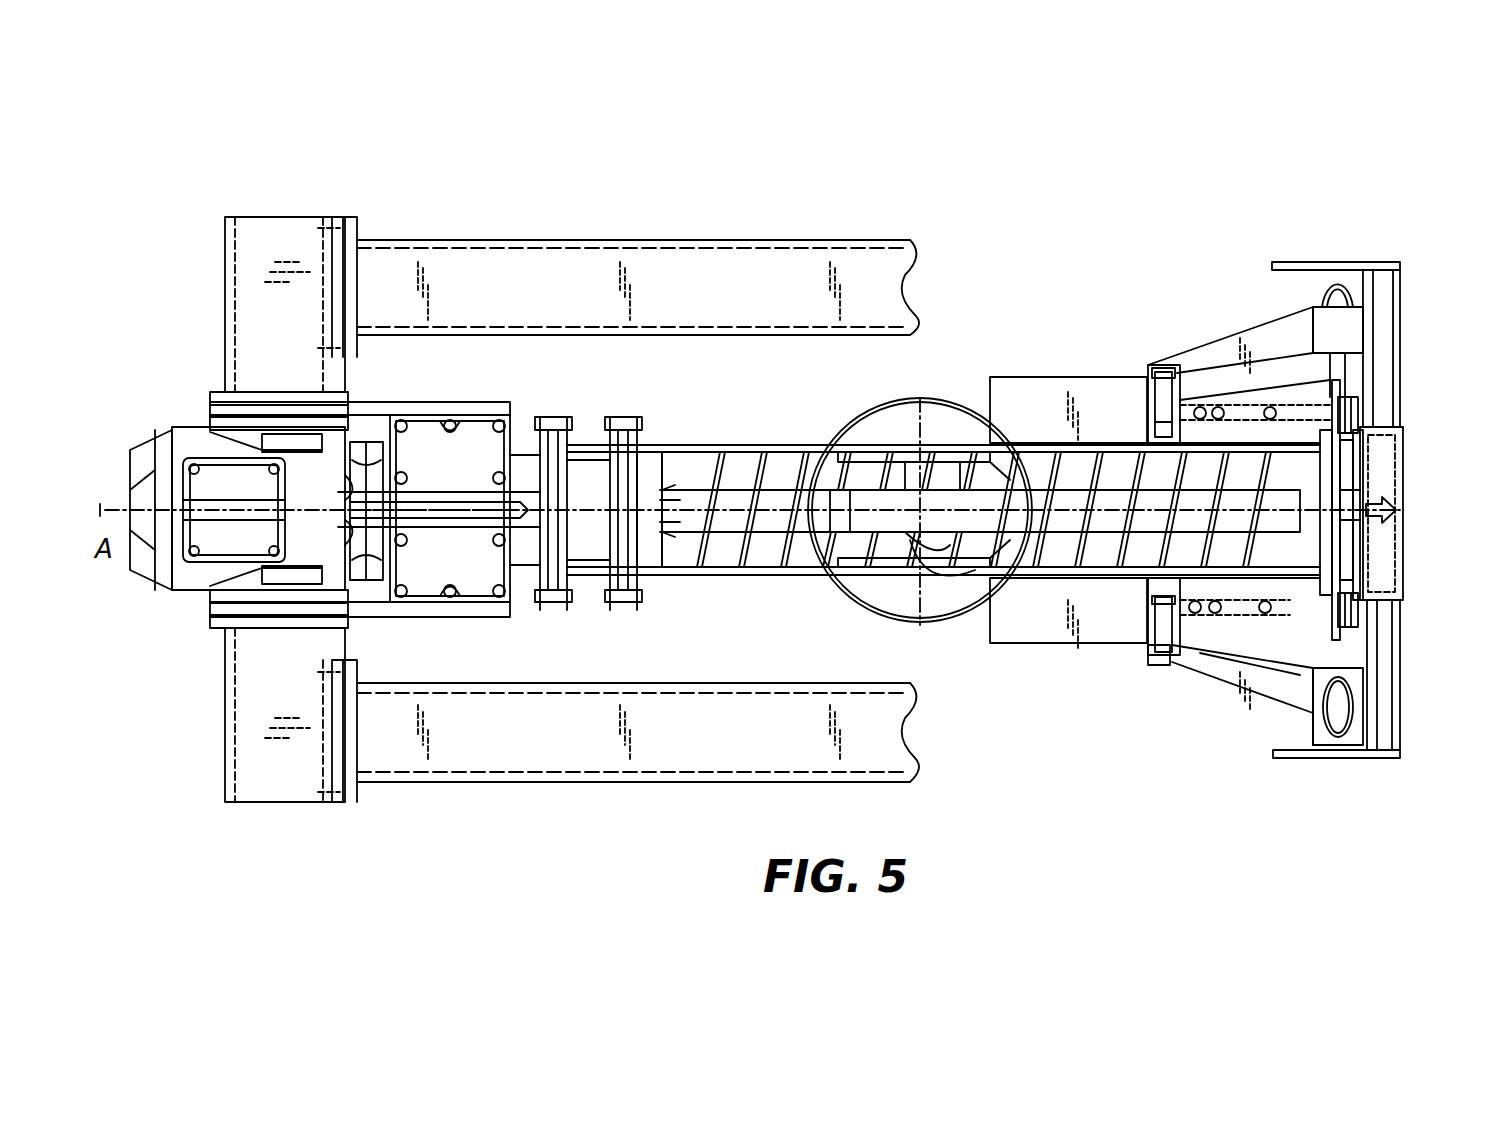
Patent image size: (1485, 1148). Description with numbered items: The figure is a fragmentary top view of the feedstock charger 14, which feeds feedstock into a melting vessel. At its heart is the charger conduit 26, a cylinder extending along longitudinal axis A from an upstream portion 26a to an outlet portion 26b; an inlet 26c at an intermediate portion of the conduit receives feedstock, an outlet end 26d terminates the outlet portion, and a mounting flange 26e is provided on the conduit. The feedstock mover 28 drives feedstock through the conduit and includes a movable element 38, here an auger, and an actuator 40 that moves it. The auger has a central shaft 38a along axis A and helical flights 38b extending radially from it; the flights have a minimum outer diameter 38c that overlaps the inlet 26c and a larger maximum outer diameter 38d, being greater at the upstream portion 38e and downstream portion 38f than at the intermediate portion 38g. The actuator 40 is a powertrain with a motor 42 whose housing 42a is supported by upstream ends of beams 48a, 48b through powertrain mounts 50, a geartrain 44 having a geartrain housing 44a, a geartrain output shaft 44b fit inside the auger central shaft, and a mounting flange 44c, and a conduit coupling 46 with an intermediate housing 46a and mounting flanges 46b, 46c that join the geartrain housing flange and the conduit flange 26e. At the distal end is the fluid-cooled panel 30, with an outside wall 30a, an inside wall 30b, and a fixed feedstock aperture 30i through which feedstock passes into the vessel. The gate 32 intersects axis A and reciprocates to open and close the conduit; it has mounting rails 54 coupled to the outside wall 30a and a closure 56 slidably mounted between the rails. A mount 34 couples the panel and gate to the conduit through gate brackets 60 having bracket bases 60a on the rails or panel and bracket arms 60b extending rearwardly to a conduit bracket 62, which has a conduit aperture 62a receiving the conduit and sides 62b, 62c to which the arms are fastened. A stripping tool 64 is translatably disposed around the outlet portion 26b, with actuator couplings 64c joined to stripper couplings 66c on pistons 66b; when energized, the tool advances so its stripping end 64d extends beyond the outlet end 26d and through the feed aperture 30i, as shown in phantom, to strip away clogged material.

The charger 14 is at (266, 148).
The charger conduit 26 is at (748, 438).
The upstream portion 26a is at (676, 445).
The outlet portion 26b is at (1330, 490).
The inlet 26c is at (862, 476).
The outlet end 26d is at (1316, 545).
The mounting flange 26e is at (637, 450).
The feedstock mover 28 is at (170, 386).
The fluid-cooled panel 30 is at (1369, 493).
The outside wall 30a is at (1345, 748).
The inside wall 30b is at (1400, 732).
The fixed feedstock aperture 30i is at (1385, 582).
The gate 32 is at (1330, 415).
The mount 34 is at (1135, 658).
The movable element 38 is at (722, 558).
The central shaft 38a is at (760, 560).
The helical flights 38b is at (945, 560).
The minimum outer diameter 38c is at (930, 470).
The maximum outer diameter 38d is at (1050, 462).
The upstream portion 38e is at (688, 560).
The downstream portion 38f is at (1337, 470).
The intermediate portion 38g is at (900, 453).
The actuator 40 is at (384, 450).
The motor 42 is at (232, 541).
The housing 42a is at (240, 585).
The geartrain 44 is at (471, 412).
The geartrain housing 44a is at (475, 617).
The geartrain output shaft 44b is at (662, 458).
The mounting flange 44c is at (548, 604).
The conduit coupling 46 is at (590, 410).
The intermediate housing 46a is at (600, 440).
The mounting flange 46b is at (560, 605).
The mounting flange 46c is at (620, 605).
The beam 48a is at (224, 815).
The beam 48b is at (458, 797).
The powertrain mount 50 is at (455, 410).
The mounting rails 54 is at (1350, 378).
The closure 56 is at (1305, 468).
The gate bracket 60 is at (1229, 493).
The bracket base 60a is at (1320, 318).
The bracket arm 60b is at (1240, 680).
The conduit bracket 62 is at (1145, 353).
The conduit aperture 62a is at (1153, 438).
The side 62b is at (1170, 372).
The side 62c is at (1152, 668).
The stripping tool 64 is at (1268, 420).
The actuator couplings 64c is at (1212, 440).
The stripping end 64d is at (1325, 498).
The piston 66b is at (1150, 610).
The stripper coupling 66c is at (1200, 612).